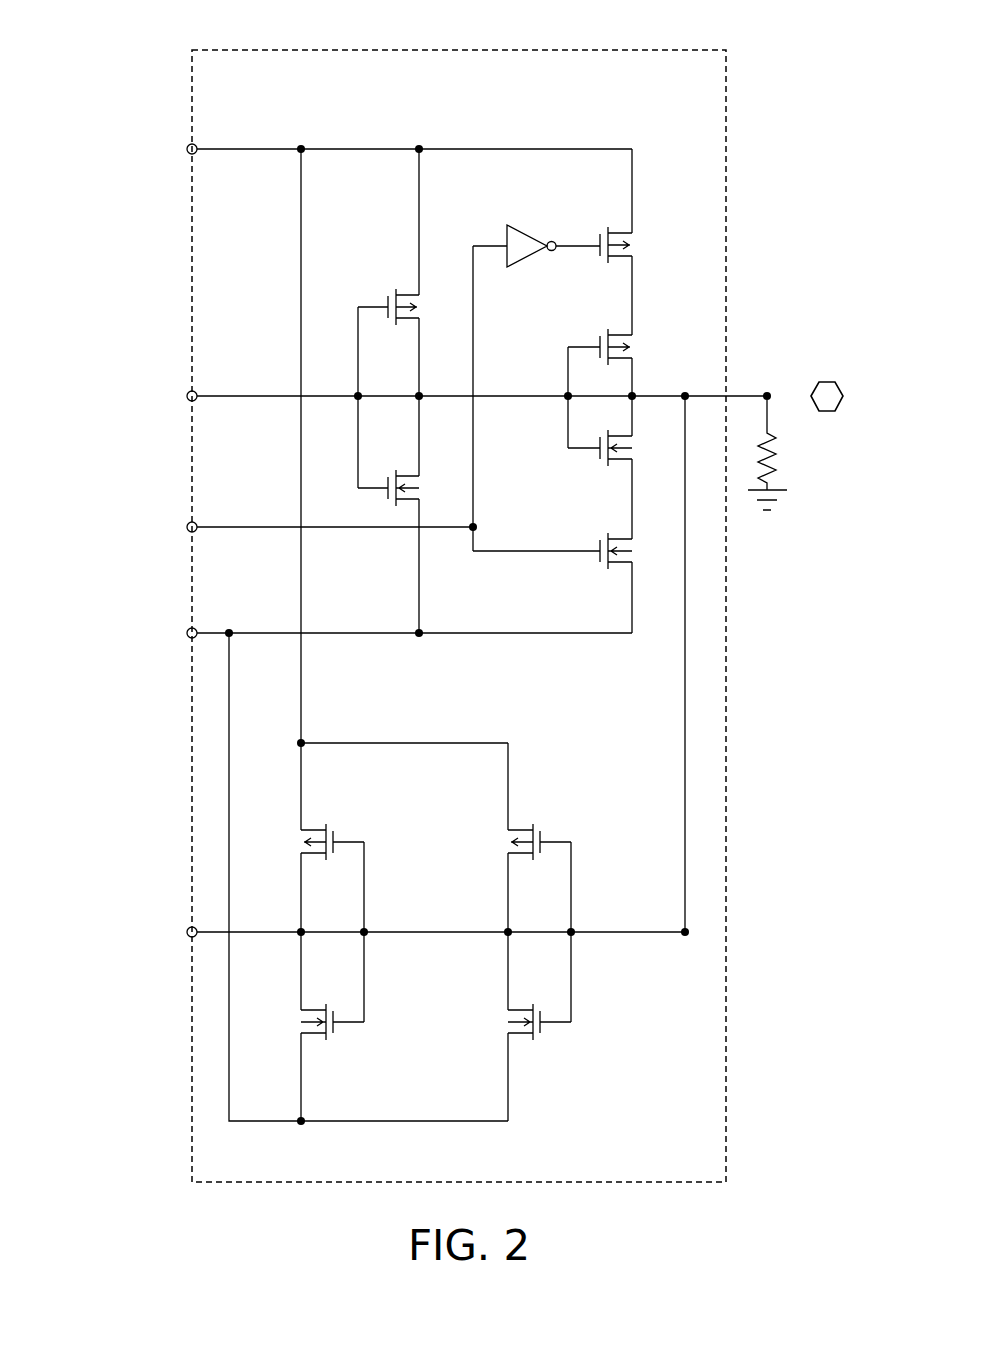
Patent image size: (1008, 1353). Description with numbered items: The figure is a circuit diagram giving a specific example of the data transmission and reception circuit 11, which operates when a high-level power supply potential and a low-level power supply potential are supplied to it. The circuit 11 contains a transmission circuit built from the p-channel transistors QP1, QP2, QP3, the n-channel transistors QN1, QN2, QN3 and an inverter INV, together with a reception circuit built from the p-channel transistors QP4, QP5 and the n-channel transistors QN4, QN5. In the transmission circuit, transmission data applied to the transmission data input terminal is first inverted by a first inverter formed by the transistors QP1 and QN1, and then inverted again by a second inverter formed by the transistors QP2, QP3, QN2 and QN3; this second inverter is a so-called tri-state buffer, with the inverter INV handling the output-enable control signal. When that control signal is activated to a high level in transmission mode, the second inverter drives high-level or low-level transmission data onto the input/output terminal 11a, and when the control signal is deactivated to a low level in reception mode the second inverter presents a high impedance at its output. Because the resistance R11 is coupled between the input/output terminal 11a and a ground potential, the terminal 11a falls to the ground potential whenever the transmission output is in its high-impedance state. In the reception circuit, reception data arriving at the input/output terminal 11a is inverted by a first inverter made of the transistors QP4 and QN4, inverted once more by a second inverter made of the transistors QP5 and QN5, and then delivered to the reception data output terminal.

The data transmission and reception circuit 11 is at (447, 50).
The input/output terminal 11a is at (827, 382).
The resistance R11 is at (787, 455).
The inverter INV is at (536, 233).
The p-channel transistor QP1 is at (378, 303).
The n-channel transistor QN1 is at (378, 493).
The p-channel transistor QP2 is at (592, 342).
The n-channel transistor QN2 is at (593, 457).
The p-channel transistor QP3 is at (592, 238).
The n-channel transistor QN3 is at (593, 558).
The p-channel transistor QP4 is at (549, 837).
The n-channel transistor QN4 is at (549, 1029).
The p-channel transistor QP5 is at (341, 837).
The n-channel transistor QN5 is at (341, 1029).